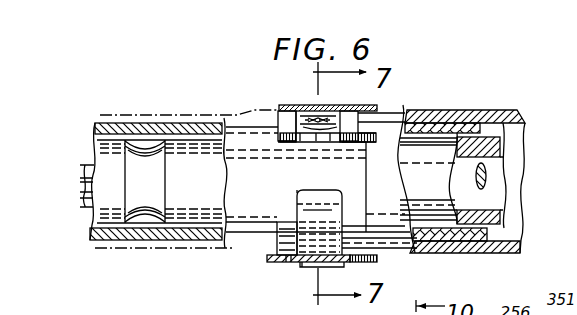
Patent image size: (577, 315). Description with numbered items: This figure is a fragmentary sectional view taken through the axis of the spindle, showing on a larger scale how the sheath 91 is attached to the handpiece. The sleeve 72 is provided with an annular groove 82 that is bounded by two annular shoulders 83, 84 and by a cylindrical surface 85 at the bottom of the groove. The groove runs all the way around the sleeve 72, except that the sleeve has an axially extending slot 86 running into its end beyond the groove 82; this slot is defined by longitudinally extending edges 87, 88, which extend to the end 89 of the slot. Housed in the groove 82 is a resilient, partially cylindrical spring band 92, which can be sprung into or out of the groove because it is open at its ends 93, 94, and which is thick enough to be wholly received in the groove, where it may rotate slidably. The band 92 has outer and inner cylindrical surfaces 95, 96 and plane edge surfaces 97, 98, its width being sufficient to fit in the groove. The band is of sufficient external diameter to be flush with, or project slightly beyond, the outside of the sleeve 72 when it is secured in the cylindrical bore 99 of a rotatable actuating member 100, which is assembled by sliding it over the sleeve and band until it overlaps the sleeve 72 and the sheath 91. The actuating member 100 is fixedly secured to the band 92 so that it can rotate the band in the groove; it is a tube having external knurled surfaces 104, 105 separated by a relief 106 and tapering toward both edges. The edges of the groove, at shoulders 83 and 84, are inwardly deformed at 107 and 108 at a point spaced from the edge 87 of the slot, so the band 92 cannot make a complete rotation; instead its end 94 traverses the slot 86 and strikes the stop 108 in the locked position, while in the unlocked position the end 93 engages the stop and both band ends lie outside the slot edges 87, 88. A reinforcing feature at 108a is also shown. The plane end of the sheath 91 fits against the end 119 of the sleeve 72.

The sleeve 72 is at (461, 116).
The annular groove 82 is at (326, 130).
The annular shoulder 83 is at (302, 137).
The annular shoulder 84 is at (317, 128).
The cylindrical surface 85 is at (316, 137).
The axially extending slot 86 is at (363, 197).
The longitudinally extending edge 87 is at (284, 142).
The longitudinally extending edge 88 is at (285, 222).
The end of slot 89 is at (331, 140).
The sheath 91 is at (182, 95).
The spring band 92 is at (319, 222).
The end of band 93 is at (334, 106).
The end of band 94 is at (297, 192).
The outer cylindrical surface 95 is at (316, 106).
The inner cylindrical surface 96 is at (345, 108).
The plane edge surface 97 is at (297, 111).
The plane edge surface 98 is at (379, 106).
The cylindrical bore 99 is at (286, 262).
The rotatable actuating member 100 is at (302, 268).
The external knurled surface 104 is at (291, 265).
The external knurled surface 105 is at (352, 261).
The relief 106 is at (344, 268).
The inwardly deformed stop 107 is at (284, 108).
The inwardly deformed stop 108 is at (282, 118).
The housing extension 108a is at (344, 127).
The end of sleeve 119 is at (268, 256).